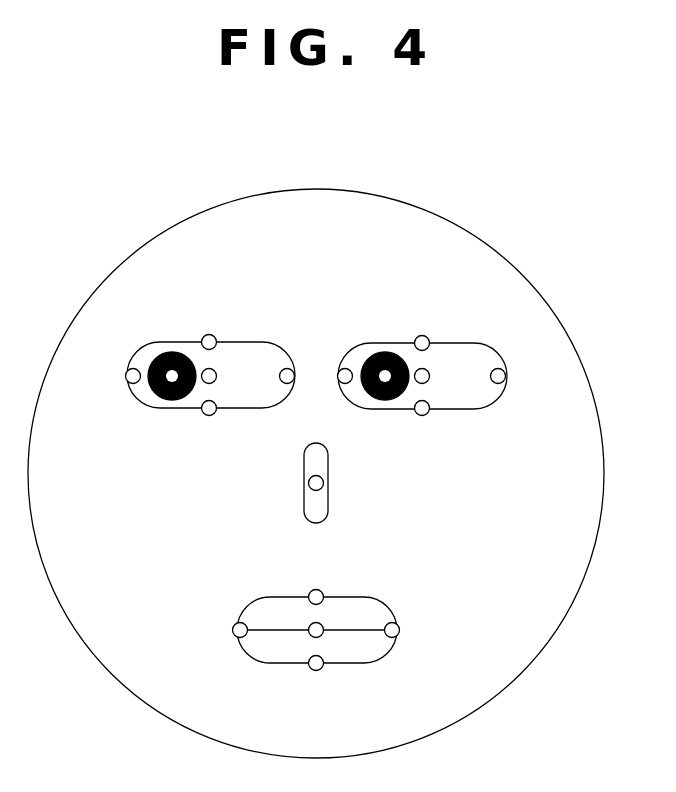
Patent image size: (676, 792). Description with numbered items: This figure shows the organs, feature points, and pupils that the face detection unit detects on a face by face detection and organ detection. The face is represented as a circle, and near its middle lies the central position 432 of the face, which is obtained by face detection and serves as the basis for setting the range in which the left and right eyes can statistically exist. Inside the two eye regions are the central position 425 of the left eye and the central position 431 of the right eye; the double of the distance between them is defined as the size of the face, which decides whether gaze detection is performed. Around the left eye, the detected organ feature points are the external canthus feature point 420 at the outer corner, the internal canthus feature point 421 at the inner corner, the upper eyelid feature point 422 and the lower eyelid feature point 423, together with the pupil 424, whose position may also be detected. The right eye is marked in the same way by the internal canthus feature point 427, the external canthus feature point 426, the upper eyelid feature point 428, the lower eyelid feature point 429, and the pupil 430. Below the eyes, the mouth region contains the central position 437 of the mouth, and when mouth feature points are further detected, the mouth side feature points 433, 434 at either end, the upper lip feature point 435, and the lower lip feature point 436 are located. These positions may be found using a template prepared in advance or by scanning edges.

The external canthus feature point 420 is at (125, 376).
The internal canthus feature point 421 is at (289, 368).
The upper eyelid feature point 422 is at (209, 334).
The lower eyelid feature point 423 is at (209, 416).
The pupil 424 is at (158, 346).
The central position of the left eye 425 is at (215, 382).
The external canthus feature point 426 is at (506, 377).
The internal canthus feature point 427 is at (344, 384).
The upper eyelid feature point 428 is at (422, 335).
The lower eyelid feature point 429 is at (422, 416).
The pupil 430 is at (370, 353).
The central position of the right eye 431 is at (429, 382).
The central position of the face 432 is at (324, 483).
The mouth side feature point 433 is at (232, 629).
The mouth side feature point 434 is at (400, 630).
The upper lip feature point 435 is at (316, 590).
The lower lip feature point 436 is at (316, 671).
The central position of the mouth 437 is at (323, 636).